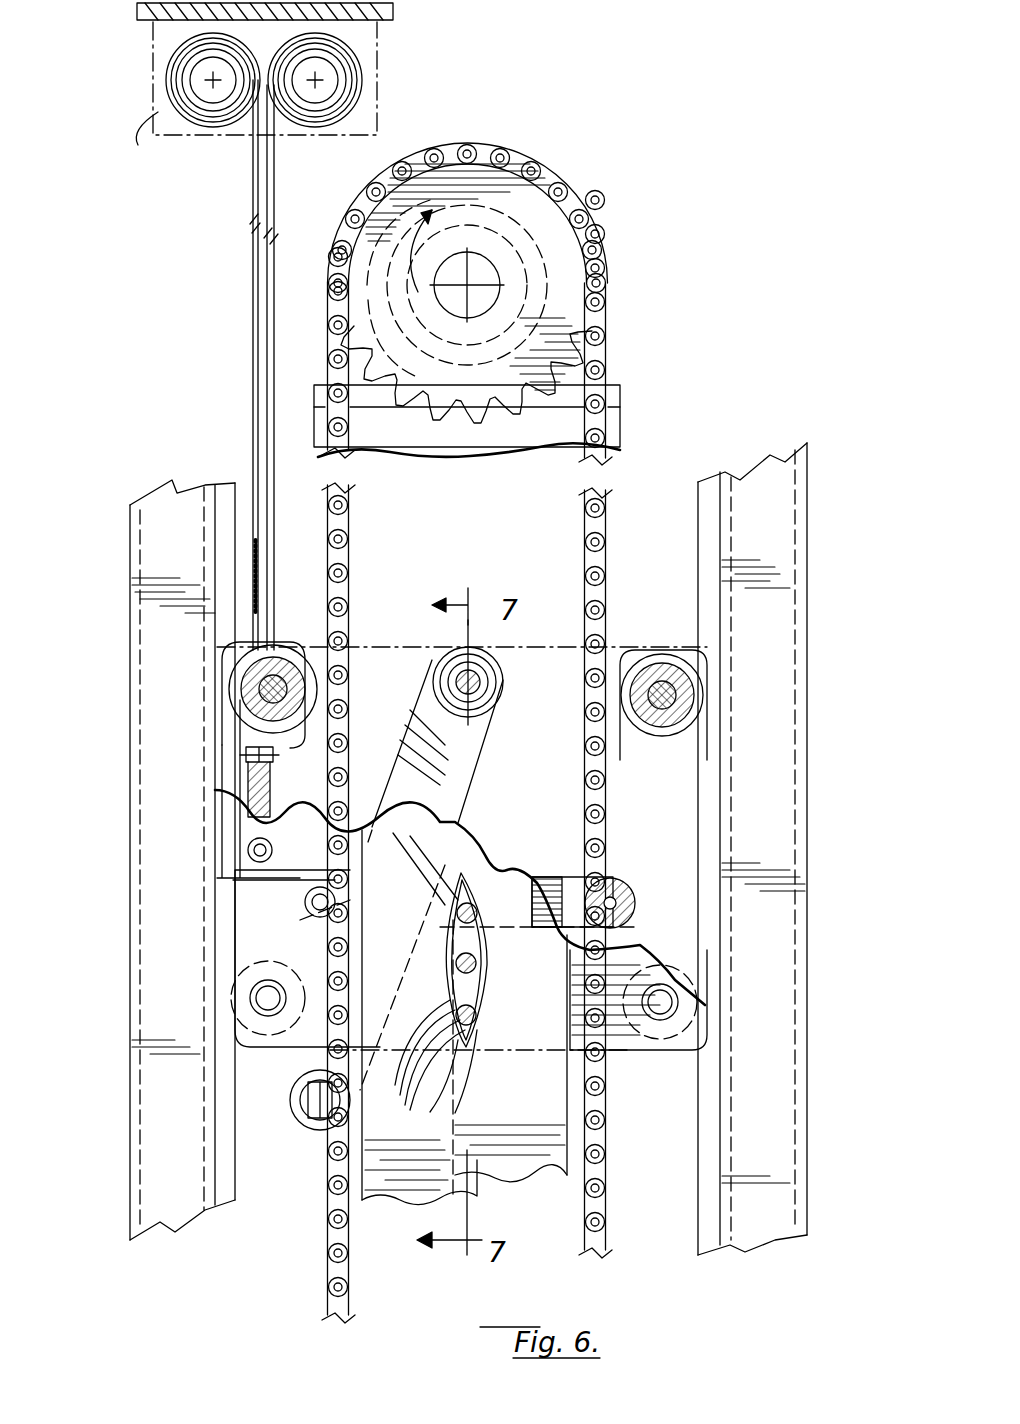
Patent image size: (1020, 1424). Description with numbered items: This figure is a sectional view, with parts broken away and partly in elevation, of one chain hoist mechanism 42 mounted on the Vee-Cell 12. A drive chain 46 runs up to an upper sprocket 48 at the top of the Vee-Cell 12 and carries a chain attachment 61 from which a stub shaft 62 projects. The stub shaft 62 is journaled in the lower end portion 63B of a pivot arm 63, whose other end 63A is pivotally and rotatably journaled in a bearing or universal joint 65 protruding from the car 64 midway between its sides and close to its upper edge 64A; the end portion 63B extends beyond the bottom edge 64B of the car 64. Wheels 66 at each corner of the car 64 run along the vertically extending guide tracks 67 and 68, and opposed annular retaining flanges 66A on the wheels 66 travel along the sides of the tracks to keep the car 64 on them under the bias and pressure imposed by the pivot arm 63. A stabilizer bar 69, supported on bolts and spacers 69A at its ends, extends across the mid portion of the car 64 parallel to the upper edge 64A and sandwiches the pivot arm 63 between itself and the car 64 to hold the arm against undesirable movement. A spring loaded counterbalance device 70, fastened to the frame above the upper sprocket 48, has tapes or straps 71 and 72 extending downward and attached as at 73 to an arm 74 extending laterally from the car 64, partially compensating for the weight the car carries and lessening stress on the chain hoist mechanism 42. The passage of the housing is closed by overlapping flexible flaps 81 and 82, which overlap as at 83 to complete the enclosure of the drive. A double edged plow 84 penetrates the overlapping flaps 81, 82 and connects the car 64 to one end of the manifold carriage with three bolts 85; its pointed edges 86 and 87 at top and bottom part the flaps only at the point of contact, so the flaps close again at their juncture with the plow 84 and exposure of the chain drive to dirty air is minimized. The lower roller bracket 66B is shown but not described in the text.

The Vee-Cell 12 is at (150, 25).
The counterbalance device 70 is at (370, 64).
The tape or strap 71 is at (280, 236).
The tape or strap 72 is at (256, 318).
The upper sprocket 48 is at (565, 275).
The drive chain 46 is at (362, 422).
The chain hoist mechanism 42 is at (705, 330).
The guide track 68 is at (252, 478).
The guide track 67 is at (702, 502).
The car 64 is at (210, 880).
The upper edge 64A is at (366, 600).
The bottom edge 64B is at (636, 1058).
The wheel 66 is at (240, 690).
The retaining flange 66A is at (300, 650).
The roller bracket 66B is at (235, 1030).
The bearing or universal joint 65 is at (455, 680).
The pivot arm 63 is at (472, 745).
The pivot arm end 63A is at (502, 690).
The pivot arm end portion 63B is at (305, 1118).
The attachment 73 is at (243, 754).
The arm 74 is at (245, 792).
The flexible flap 82 is at (452, 828).
The overlap 83 is at (470, 834).
The stabilizer bar 69 is at (580, 877).
The bolts and spacers 69A is at (642, 890).
The double edged plow 84 is at (445, 978).
The bolt 85 is at (478, 1012).
The pointed edge 86 is at (456, 908).
The pointed edge 87 is at (470, 1040).
The stub shaft 62 is at (302, 1090).
The chain attachment 61 is at (322, 1132).
The flexible flap 81 is at (512, 1155).